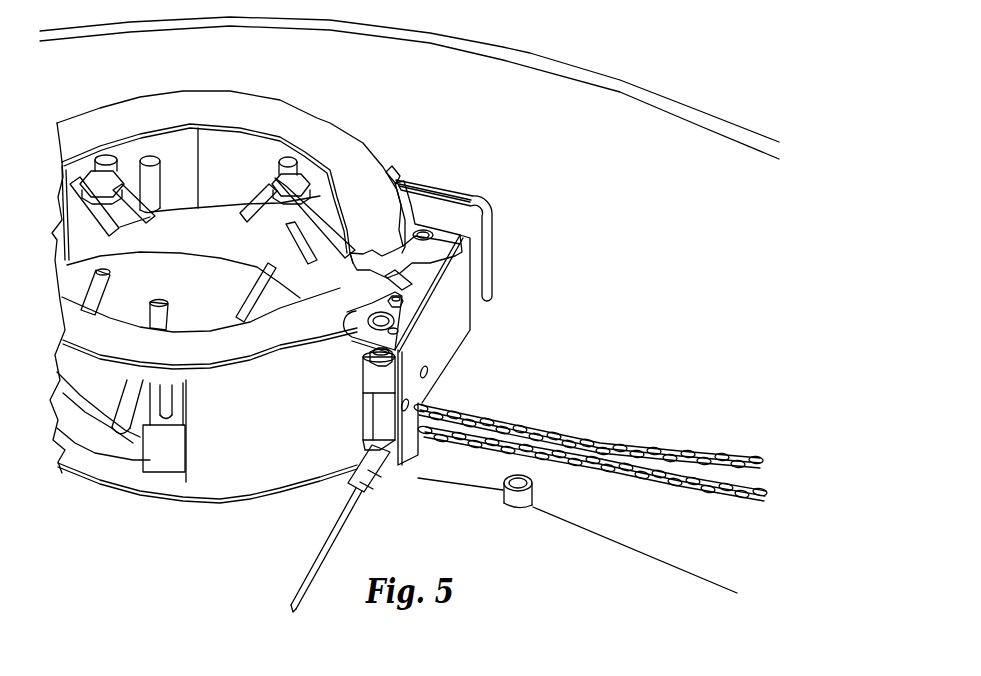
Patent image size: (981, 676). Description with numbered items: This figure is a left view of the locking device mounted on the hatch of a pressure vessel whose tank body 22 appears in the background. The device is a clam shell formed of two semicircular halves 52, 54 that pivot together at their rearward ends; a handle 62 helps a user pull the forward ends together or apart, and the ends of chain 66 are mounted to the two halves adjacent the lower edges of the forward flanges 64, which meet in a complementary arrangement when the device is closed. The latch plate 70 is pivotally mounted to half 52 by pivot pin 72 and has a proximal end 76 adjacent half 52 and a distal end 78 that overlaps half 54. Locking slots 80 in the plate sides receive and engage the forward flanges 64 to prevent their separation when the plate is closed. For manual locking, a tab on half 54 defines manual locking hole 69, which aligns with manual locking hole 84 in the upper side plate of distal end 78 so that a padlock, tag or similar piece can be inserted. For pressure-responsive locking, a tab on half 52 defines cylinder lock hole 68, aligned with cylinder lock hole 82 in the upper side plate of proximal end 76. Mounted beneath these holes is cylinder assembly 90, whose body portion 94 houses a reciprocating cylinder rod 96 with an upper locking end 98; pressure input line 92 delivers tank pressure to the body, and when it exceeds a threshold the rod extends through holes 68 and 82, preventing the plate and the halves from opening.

The tank body 22 is at (514, 130).
The semicircular half 54 is at (232, 106).
The semicircular half 52 is at (198, 345).
The handle 62 is at (497, 262).
The forward flange 64 is at (400, 247).
The chain 66 is at (605, 440).
The cylinder lock hole 68 is at (378, 312).
The manual locking hole 69 is at (423, 228).
The latch plate 70 is at (443, 345).
The pivot pin 72 is at (404, 302).
The proximal end 76 is at (412, 389).
The distal end 78 is at (456, 296).
The locking slot 80 is at (493, 256).
The cylinder lock hole 82 is at (400, 320).
The manual locking hole 84 is at (445, 213).
The cylinder assembly 90 is at (363, 400).
The pressure input line 92 is at (313, 552).
The body portion 94 is at (370, 420).
The cylinder rod 96 is at (368, 358).
The upper locking end 98 is at (366, 320).